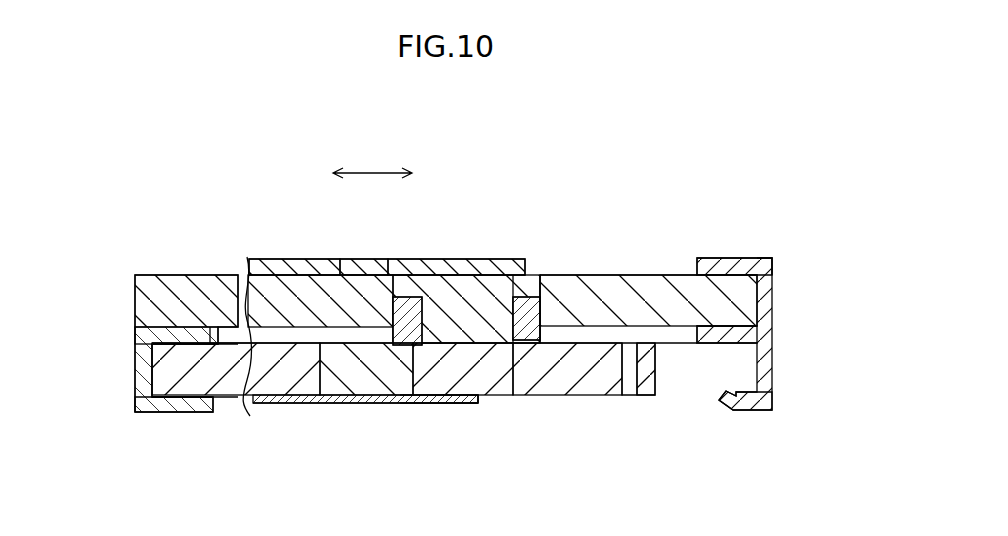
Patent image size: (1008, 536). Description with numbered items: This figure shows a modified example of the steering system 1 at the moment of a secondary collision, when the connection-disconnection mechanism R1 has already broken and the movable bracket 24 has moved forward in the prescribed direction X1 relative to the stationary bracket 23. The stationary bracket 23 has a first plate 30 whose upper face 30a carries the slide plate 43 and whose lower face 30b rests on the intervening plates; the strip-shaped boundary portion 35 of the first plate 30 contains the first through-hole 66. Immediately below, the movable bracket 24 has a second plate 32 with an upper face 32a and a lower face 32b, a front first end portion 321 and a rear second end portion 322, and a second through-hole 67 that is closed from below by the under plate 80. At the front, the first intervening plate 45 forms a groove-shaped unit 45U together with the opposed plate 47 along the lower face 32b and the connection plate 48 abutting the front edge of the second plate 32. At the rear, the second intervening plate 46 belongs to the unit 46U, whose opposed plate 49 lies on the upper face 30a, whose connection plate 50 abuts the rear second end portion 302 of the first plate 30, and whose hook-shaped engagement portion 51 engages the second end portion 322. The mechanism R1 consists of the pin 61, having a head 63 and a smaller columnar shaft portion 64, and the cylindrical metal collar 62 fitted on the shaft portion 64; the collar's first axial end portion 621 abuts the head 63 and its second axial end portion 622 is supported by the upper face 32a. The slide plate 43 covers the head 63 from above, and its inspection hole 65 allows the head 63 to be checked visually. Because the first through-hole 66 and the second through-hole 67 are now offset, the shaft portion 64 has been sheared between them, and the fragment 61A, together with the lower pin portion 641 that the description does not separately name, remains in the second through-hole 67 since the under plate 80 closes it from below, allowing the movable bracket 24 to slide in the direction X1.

The steering system 1 is at (713, 202).
The prescribed direction X1 is at (373, 172).
The stationary bracket 23 is at (427, 229).
The first plate 30 is at (191, 270).
The upper face of the first plate 30a is at (612, 273).
The lower face of the first plate 30b is at (250, 352).
The second plate 32 is at (594, 400).
The movable bracket 24 is at (397, 389).
The upper face of the second plate 32a is at (240, 335).
The lower face of the second plate 32b is at (173, 398).
The first end portion 321 is at (147, 386).
The second end portion 322 is at (656, 371).
The boundary portion 35 is at (288, 272).
The slide plate 43 is at (458, 262).
The first intervening plate 45 is at (170, 323).
The groove-shaped unit 45U is at (128, 345).
The second intervening plate 46 is at (710, 323).
The unit 46U is at (778, 268).
The opposed plate 47 is at (200, 413).
The connection plate 48 is at (163, 375).
The opposed plate 49 is at (733, 266).
The connection plate 50 is at (766, 291).
The engagement portion 51 is at (752, 413).
The pin 61 is at (489, 293).
The fragment 61A is at (440, 366).
The metal collar 62 is at (546, 312).
The first axial end portion 621 is at (411, 295).
The second axial end portion 622 is at (390, 400).
The head 63 is at (532, 290).
The shaft portion 64 is at (499, 340).
The base plate 641 is at (326, 405).
The inspection hole 65 is at (352, 260).
The first through-hole 66 is at (378, 260).
The second through-hole 67 is at (405, 403).
The under plate 80 is at (448, 407).
The connection-disconnection mechanism R1 is at (474, 414).
The second end portion 302 is at (746, 319).